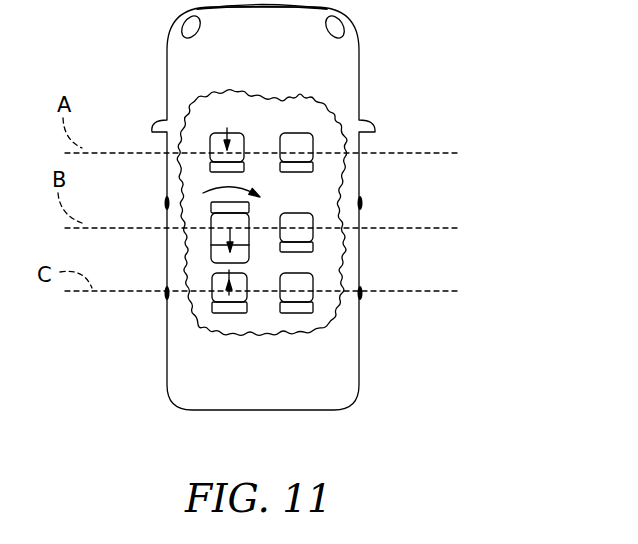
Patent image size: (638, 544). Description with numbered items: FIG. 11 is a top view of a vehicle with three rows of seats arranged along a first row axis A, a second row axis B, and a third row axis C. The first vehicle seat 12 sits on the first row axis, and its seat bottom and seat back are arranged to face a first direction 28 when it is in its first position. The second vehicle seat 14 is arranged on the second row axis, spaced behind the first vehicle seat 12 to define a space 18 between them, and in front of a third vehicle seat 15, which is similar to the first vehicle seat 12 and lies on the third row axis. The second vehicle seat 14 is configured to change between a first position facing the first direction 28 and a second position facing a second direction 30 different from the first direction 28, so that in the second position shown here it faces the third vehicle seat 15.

The first vehicle seat 12 is at (233, 122).
The second vehicle seat 14 is at (194, 213).
The third vehicle seat 15 is at (204, 342).
The space 18 is at (258, 269).
The first direction 28 is at (228, 150).
The second direction 30 is at (230, 235).